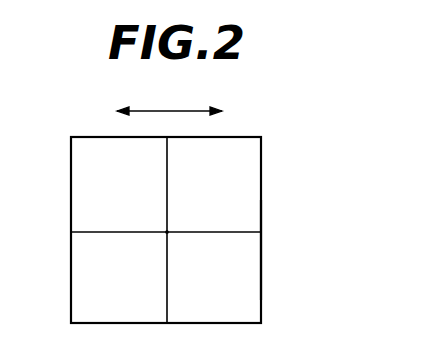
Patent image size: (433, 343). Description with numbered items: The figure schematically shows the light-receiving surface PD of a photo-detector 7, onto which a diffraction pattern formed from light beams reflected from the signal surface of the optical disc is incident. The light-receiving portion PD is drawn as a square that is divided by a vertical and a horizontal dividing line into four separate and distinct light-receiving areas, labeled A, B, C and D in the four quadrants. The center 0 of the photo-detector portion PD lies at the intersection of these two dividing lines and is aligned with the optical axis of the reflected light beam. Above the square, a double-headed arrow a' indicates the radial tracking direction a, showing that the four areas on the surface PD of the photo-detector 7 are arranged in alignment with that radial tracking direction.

The light-receiving surface PD is at (276, 148).
The radial tracking direction a is at (169, 102).
The center 0 is at (167, 232).
The photo-detector 7 is at (261, 248).